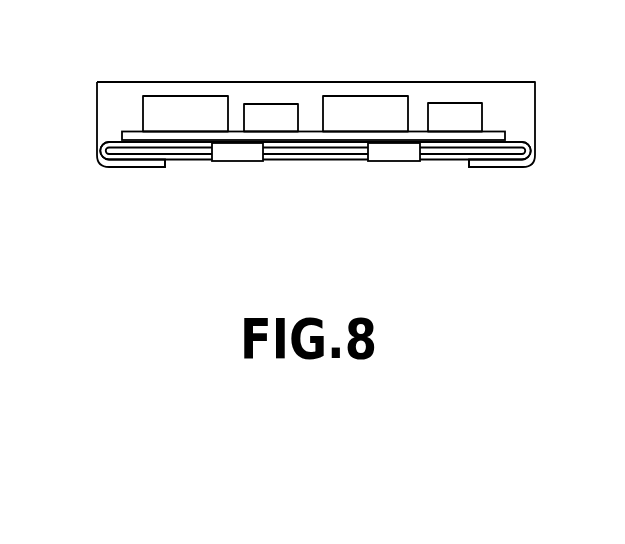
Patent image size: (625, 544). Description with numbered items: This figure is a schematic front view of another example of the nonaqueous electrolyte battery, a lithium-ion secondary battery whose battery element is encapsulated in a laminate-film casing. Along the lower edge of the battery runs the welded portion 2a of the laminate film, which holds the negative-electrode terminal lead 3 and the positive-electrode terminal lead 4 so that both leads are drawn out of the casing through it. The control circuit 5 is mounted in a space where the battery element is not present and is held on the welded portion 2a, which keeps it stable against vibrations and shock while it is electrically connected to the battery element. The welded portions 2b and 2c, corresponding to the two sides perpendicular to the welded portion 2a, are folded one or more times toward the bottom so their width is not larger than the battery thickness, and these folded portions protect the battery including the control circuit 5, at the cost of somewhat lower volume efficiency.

The control circuit 5 is at (312, 133).
The welded portion 2a is at (308, 160).
The welded portion 2b is at (132, 164).
The welded portion 2c is at (505, 162).
The negative-electrode terminal lead 3 is at (403, 162).
The positive-electrode terminal lead 4 is at (235, 162).